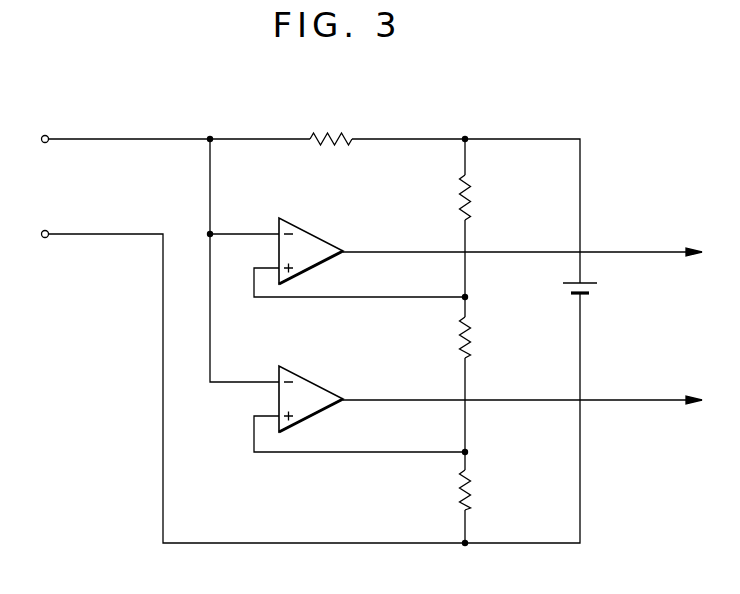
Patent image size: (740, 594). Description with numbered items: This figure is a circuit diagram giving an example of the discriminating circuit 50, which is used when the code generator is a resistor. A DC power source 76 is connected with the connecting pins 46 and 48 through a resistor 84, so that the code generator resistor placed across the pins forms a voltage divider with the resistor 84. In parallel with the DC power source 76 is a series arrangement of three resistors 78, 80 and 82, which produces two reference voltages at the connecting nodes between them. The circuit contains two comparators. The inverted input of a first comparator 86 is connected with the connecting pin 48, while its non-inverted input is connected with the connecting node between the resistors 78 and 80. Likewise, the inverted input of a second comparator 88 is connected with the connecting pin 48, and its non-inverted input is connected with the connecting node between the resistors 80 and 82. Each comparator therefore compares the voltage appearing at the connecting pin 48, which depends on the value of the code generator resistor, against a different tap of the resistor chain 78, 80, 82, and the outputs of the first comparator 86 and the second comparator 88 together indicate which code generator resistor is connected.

The connecting pin 46 is at (45, 134).
The connecting pin 48 is at (45, 229).
The discriminating circuit 50 is at (532, 130).
The DC power source 76 is at (598, 291).
The resistor 78 is at (470, 201).
The resistor 80 is at (470, 341).
The resistor 82 is at (472, 493).
The resistor 84 is at (332, 131).
The first comparator 86 is at (327, 228).
The second comparator 88 is at (328, 378).